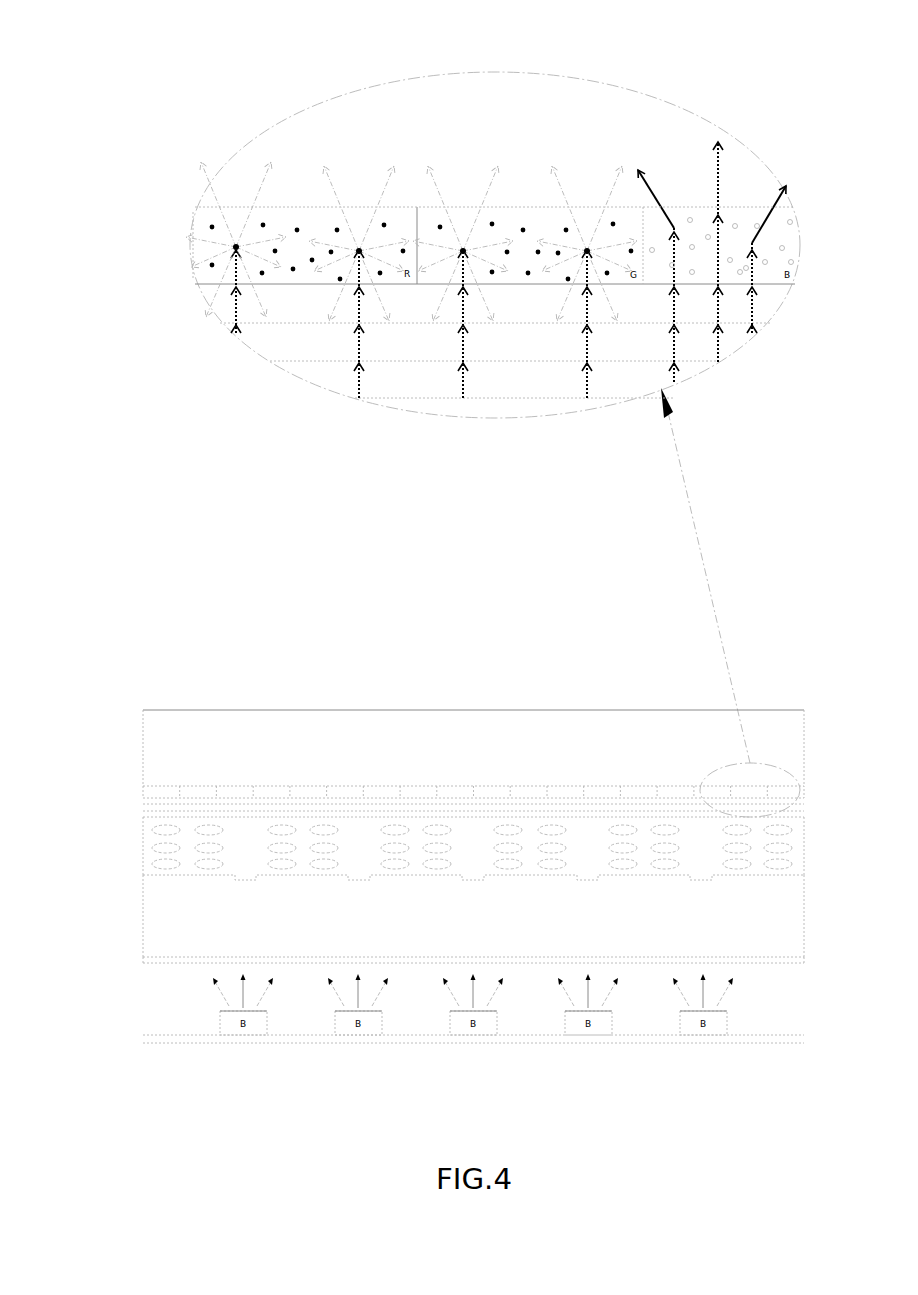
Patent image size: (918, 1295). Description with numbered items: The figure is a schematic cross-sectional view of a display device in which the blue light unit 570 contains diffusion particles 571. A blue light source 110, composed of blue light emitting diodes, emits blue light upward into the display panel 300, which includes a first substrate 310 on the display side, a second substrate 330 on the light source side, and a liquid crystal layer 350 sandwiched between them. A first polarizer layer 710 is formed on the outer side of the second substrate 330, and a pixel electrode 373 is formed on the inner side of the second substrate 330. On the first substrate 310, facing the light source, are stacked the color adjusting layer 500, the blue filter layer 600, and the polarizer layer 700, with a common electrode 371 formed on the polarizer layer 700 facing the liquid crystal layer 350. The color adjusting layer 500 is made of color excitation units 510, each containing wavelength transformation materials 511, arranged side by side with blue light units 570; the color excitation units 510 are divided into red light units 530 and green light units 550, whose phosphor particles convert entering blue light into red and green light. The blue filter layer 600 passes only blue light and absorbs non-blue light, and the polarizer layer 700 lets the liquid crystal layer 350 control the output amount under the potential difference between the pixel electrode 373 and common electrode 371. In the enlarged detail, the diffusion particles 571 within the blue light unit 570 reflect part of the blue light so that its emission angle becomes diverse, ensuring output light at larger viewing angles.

The blue light source 110 is at (260, 1027).
The display panel 300 is at (462, 796).
The first substrate 310 is at (150, 730).
The second substrate 330 is at (148, 915).
The liquid crystal layer 350 is at (142, 821).
The common electrode 371 is at (340, 381).
The pixel electrode 373 is at (142, 877).
The color adjusting layer 500 is at (450, 703).
The color excitation unit 510 is at (224, 646).
The wavelength transformation material 511 is at (516, 205).
The red light unit 530 is at (318, 207).
The green light unit 550 is at (557, 232).
The blue light unit 570 is at (538, 431).
The diffusion particle 571 is at (775, 246).
The blue filter layer 600 is at (225, 300).
The polarizer layer 700 is at (272, 347).
The first polarizer layer 710 is at (140, 963).